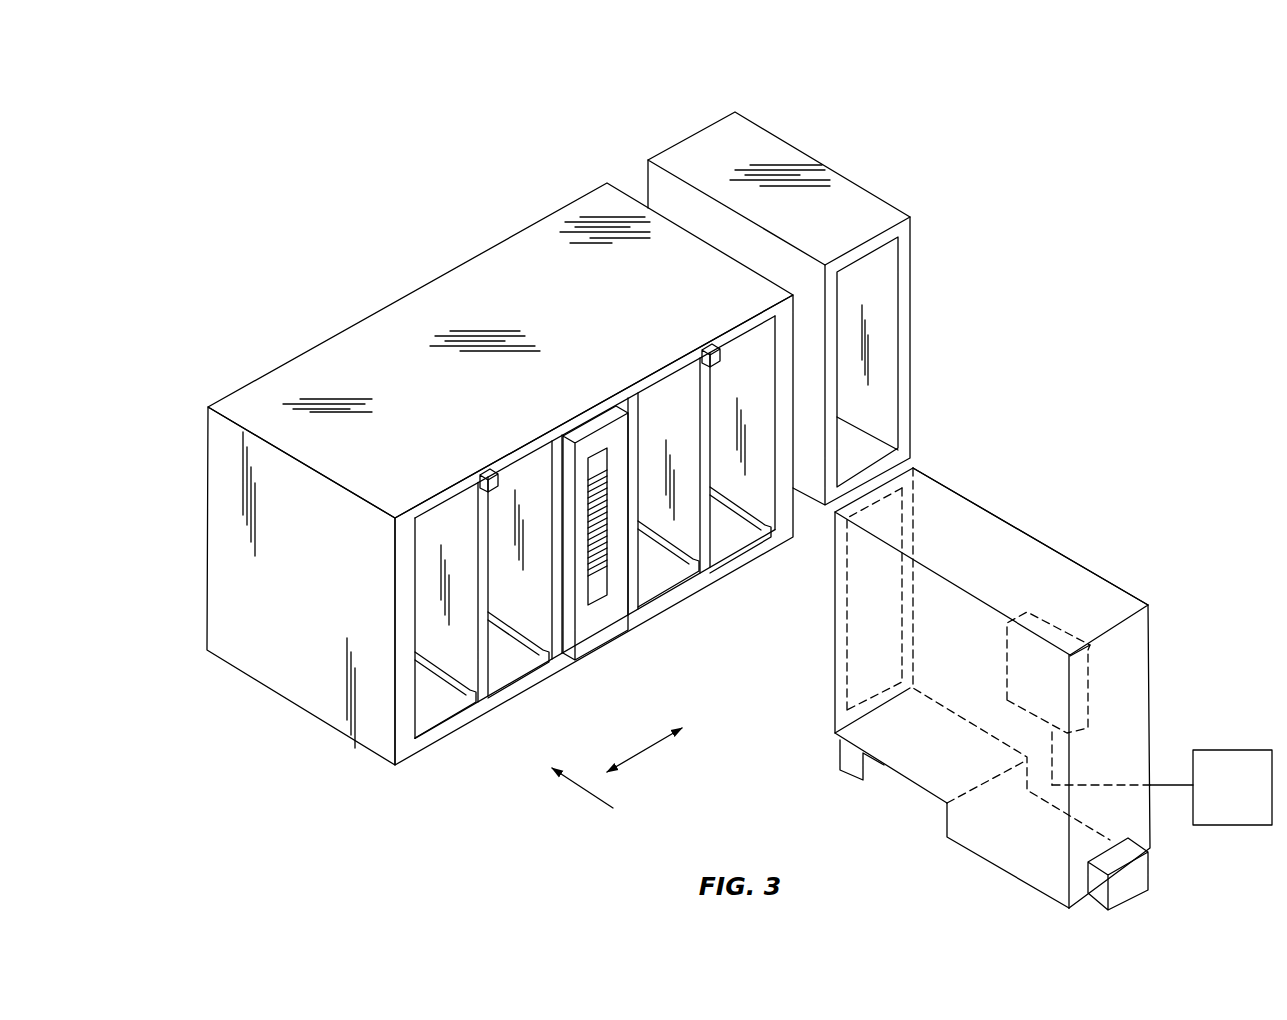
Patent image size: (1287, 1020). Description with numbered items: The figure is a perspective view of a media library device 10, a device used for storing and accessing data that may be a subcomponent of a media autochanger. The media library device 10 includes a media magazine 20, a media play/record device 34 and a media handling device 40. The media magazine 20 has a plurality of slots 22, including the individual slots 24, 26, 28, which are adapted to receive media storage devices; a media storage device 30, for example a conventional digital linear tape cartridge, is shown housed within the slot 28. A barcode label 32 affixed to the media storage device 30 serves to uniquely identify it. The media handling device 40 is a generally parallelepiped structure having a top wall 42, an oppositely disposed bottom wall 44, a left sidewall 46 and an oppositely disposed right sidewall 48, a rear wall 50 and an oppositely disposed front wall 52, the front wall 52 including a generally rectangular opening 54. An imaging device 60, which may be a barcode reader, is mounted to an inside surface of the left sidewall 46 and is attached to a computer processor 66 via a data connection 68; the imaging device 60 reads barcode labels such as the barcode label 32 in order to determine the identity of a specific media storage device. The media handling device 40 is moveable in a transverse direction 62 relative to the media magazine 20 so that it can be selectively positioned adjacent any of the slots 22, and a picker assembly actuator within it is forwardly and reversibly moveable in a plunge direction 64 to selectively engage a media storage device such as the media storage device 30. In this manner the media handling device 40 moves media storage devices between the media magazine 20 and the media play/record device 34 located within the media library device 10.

The media library device 10 is at (1091, 346).
The media magazine 20 is at (406, 294).
The slots 22 is at (512, 485).
The slot 24 is at (455, 515).
The slot 26 is at (527, 478).
The slot 28 is at (620, 622).
The media storage device 30 is at (589, 561).
The barcode label 32 is at (597, 598).
The media play/record device 34 is at (873, 190).
The media handling device 40 is at (983, 676).
The top wall 42 is at (993, 535).
The bottom wall 44 is at (925, 808).
The left sidewall 46 is at (988, 832).
The right sidewall 48 is at (1080, 552).
The rear wall 50 is at (1138, 656).
The front wall 52 is at (831, 620).
The rectangular opening 54 is at (845, 668).
The imaging device 60 is at (1078, 708).
The transverse direction 62 is at (643, 752).
The plunge direction 64 is at (587, 790).
The computer processor 66 is at (1221, 801).
The data connection 68 is at (1167, 790).